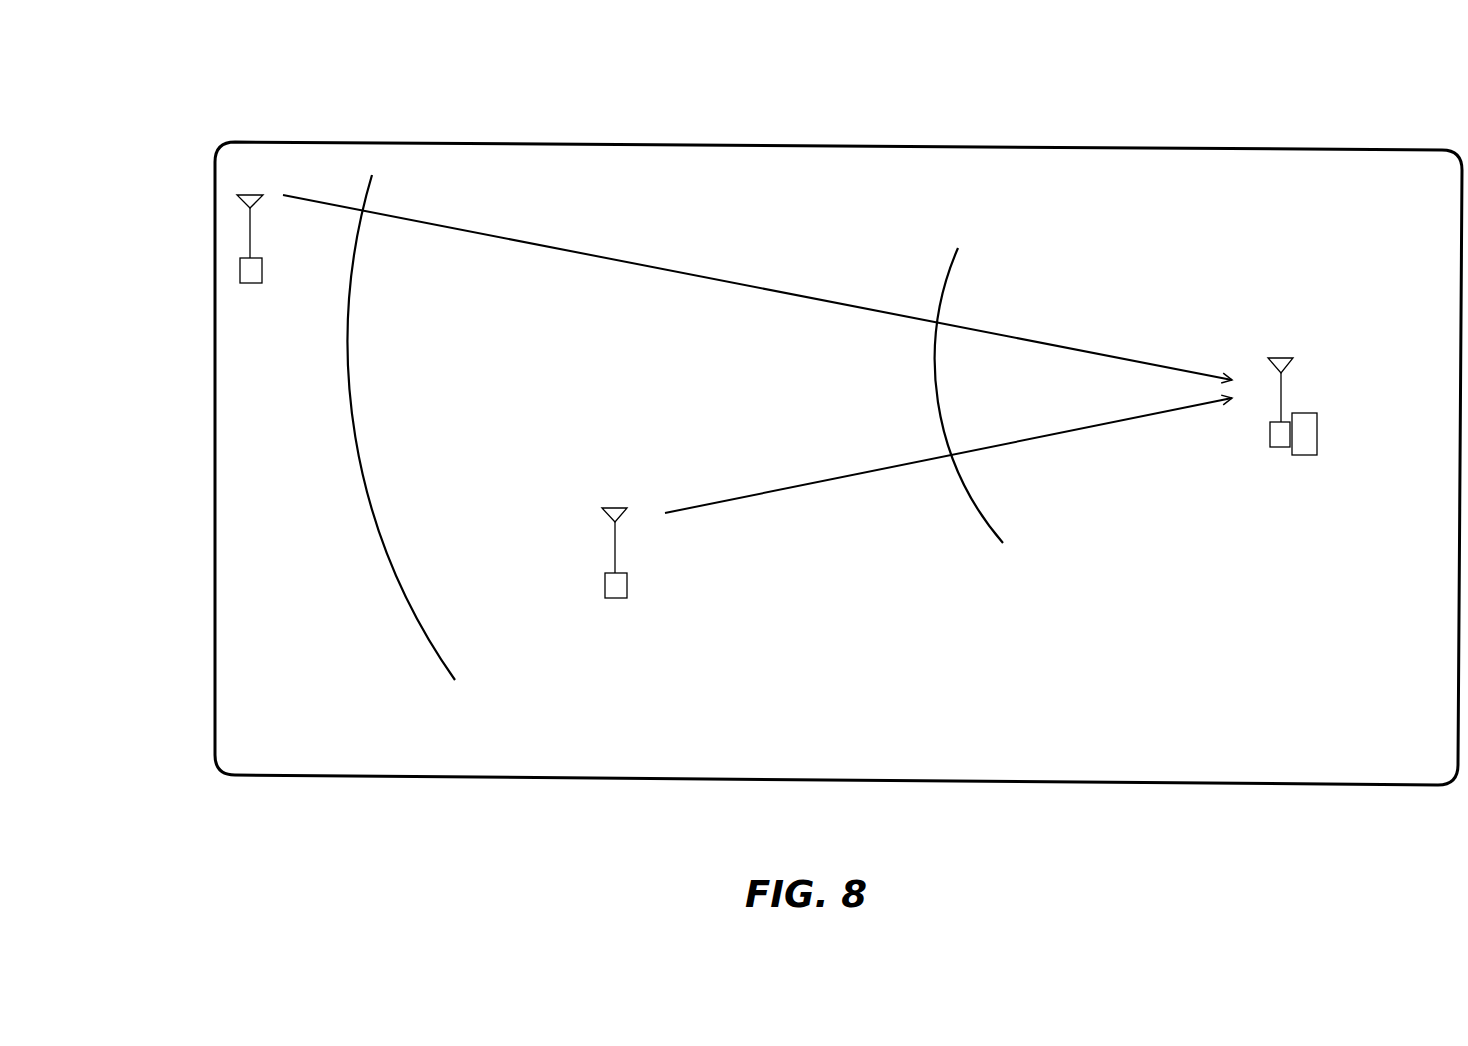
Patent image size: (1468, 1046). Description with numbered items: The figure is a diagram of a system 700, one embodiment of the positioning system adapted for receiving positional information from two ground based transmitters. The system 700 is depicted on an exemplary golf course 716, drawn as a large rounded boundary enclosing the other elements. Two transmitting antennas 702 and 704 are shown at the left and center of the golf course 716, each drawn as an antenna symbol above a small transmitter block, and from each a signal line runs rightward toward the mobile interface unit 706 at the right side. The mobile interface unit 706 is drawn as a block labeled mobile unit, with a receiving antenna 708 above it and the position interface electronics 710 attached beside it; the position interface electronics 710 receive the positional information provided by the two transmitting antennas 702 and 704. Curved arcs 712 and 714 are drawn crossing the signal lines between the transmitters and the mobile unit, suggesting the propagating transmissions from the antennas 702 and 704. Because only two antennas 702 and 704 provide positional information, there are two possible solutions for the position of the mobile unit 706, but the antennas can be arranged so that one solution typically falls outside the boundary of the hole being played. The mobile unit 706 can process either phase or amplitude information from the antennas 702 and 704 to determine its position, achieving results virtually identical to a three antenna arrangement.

The system 700 is at (703, 57).
The transmitting antenna 702 is at (250, 195).
The transmitting antenna 704 is at (612, 508).
The mobile interface unit 706 is at (1312, 413).
The mobile unit antenna 708 is at (1287, 358).
The position interface electronics 710 is at (1280, 447).
The first signal wavefront 712 is at (422, 637).
The second signal wavefront 714 is at (982, 520).
The golf course 716 is at (940, 147).